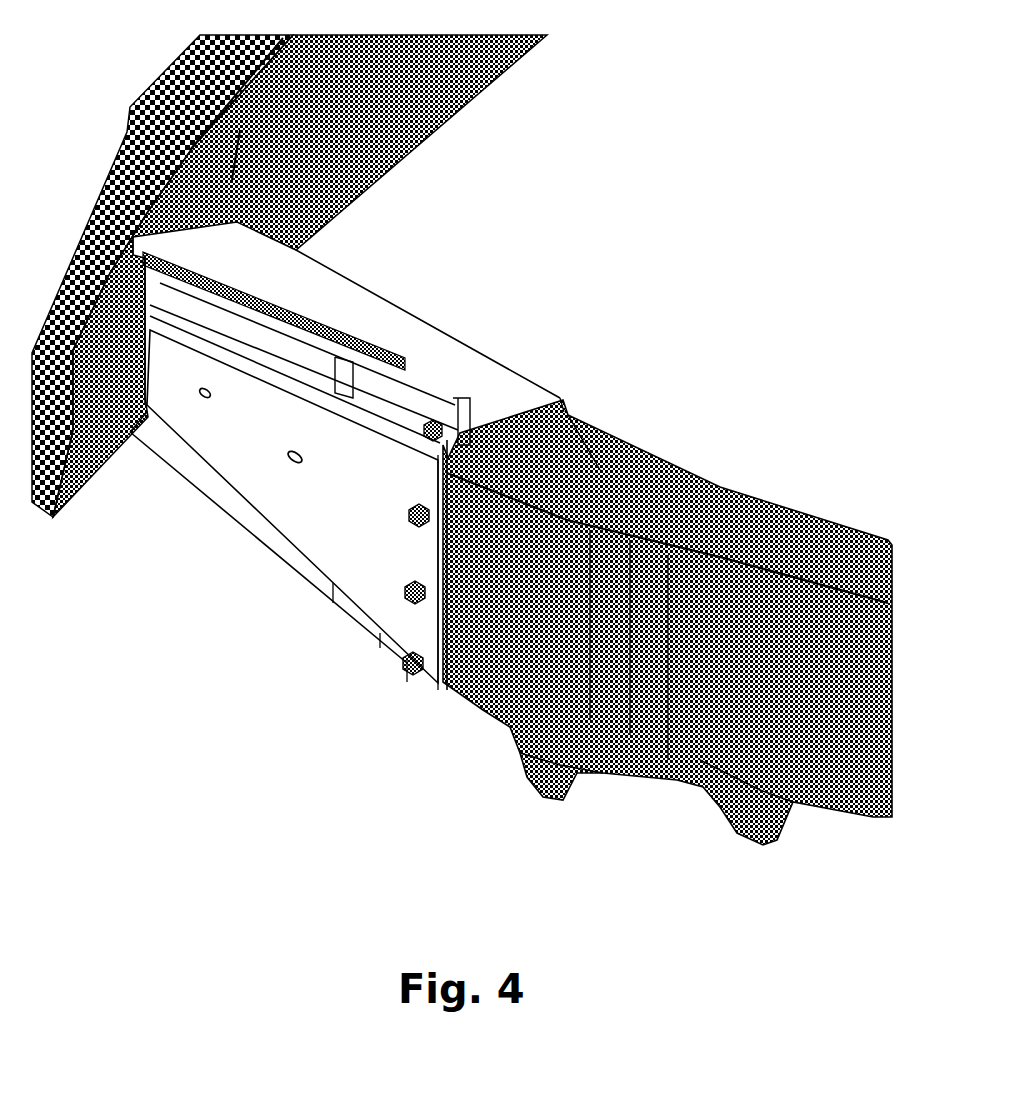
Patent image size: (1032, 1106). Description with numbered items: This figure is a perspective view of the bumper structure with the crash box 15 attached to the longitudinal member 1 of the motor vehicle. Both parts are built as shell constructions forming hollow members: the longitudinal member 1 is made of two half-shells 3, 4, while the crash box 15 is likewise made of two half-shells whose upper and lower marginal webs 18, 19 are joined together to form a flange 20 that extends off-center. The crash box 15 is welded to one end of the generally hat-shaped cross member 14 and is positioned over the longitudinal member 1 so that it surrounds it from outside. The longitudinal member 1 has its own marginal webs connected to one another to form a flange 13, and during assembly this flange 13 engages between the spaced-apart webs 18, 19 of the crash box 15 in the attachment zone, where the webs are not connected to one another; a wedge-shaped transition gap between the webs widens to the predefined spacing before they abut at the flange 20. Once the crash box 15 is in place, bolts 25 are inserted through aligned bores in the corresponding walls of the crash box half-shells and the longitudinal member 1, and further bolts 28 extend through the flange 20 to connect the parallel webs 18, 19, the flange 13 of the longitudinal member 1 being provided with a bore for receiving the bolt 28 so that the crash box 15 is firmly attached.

The longitudinal member 1 is at (838, 525).
The half-shell 3 is at (783, 517).
The half-shell 4 is at (687, 753).
The flange 13 is at (572, 477).
The cross member 14 is at (482, 100).
The crash box 15 is at (382, 283).
The upper marginal web 18 is at (395, 425).
The lower marginal web 19 is at (440, 395).
The flange 20 is at (277, 318).
The bolts 25 is at (412, 523).
The bolts 28 is at (478, 372).